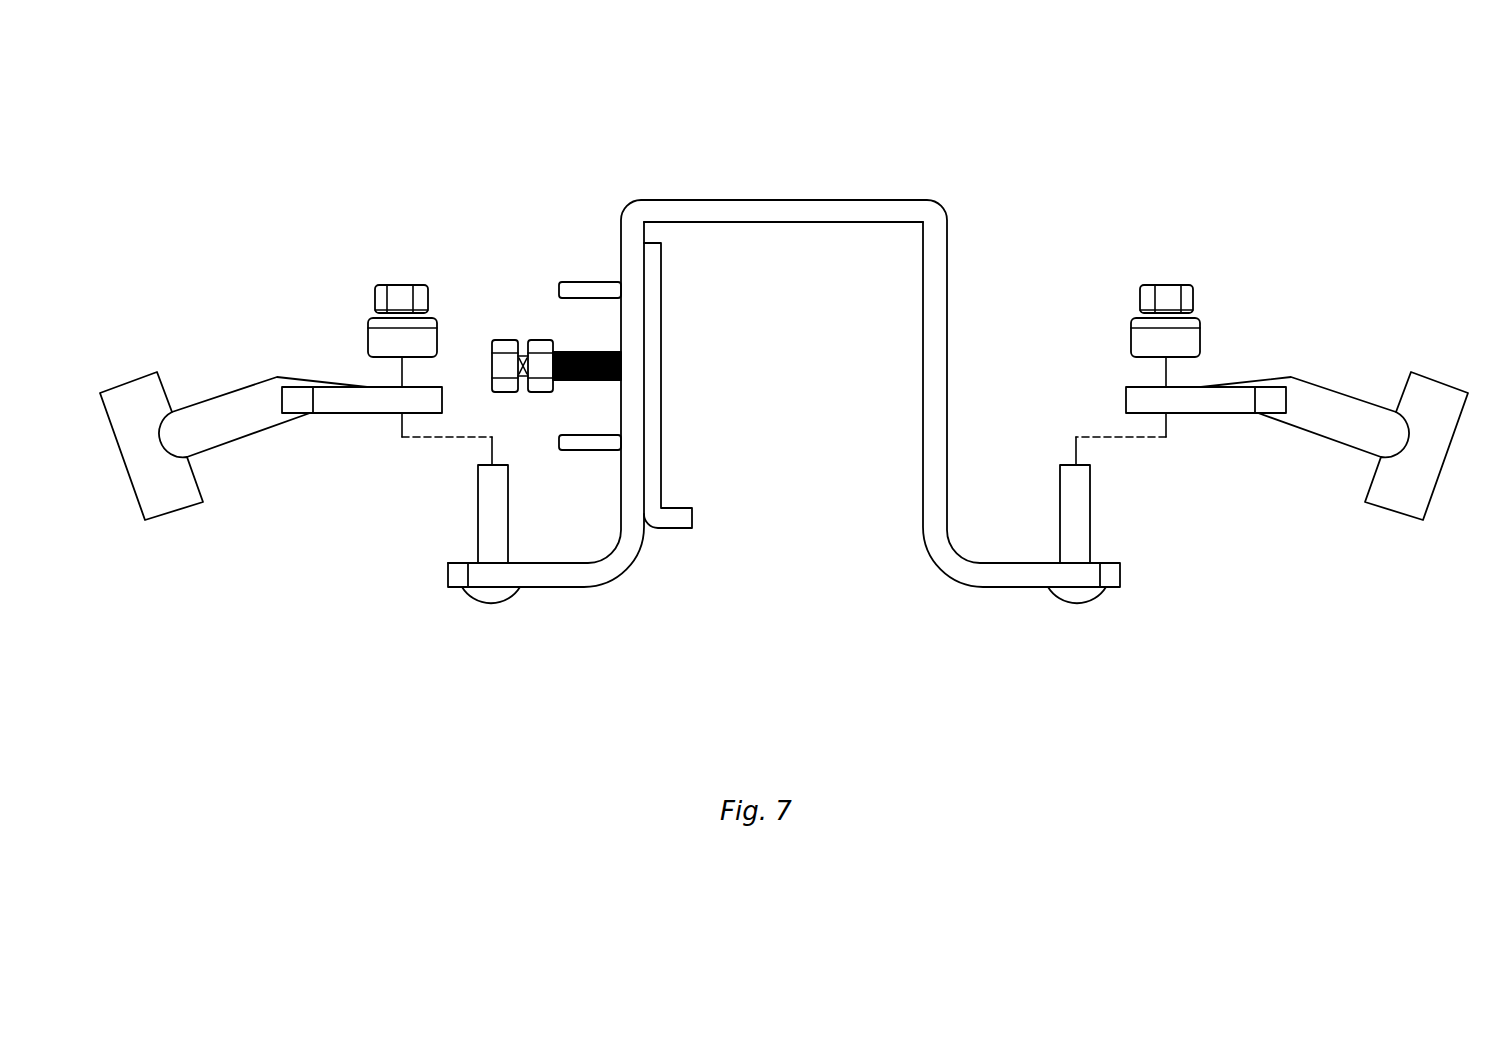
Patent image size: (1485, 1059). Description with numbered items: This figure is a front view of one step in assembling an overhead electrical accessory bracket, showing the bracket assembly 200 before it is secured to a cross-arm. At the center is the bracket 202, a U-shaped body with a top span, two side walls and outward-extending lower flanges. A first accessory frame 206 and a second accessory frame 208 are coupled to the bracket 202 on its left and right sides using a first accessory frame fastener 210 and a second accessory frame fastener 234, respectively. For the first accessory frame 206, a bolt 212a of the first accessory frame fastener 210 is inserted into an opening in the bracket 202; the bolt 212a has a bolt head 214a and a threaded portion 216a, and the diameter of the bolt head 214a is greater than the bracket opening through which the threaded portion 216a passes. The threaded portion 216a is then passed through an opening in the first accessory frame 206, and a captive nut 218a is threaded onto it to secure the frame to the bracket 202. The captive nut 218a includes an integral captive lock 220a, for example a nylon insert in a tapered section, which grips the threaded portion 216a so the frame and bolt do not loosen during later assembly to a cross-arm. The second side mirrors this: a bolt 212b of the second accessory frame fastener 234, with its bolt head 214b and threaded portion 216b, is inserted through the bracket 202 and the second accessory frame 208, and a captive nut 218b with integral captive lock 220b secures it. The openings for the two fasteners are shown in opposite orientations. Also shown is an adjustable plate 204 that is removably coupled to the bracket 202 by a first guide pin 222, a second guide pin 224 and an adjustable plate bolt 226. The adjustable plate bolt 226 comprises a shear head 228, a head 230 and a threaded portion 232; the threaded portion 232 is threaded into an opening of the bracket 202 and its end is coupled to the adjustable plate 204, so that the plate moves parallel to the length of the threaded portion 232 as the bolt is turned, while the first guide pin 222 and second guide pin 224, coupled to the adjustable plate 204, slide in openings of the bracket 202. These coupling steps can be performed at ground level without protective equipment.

The bracket assembly 200 is at (822, 160).
The bracket 202 is at (677, 208).
The adjustable plate 204 is at (677, 522).
The first accessory frame 206 is at (247, 382).
The second accessory frame 208 is at (1338, 372).
The first accessory frame fastener 210 is at (487, 628).
The bolt 212a is at (437, 513).
The bolt 212b is at (1122, 520).
The bolt head 214a is at (477, 598).
The bolt head 214b is at (1088, 600).
The threaded portion 216a is at (478, 488).
The threaded portion 216b is at (1060, 502).
The captive nut 218a is at (360, 278).
The captive nut 218b is at (1215, 295).
The captive lock 220a is at (368, 337).
The captive lock 220b is at (1203, 336).
The first guide pin 222 is at (585, 282).
The second guide pin 224 is at (583, 452).
The adjustable plate bolt 226 is at (520, 310).
The shear head 228 is at (490, 360).
The head 230 is at (540, 390).
The threaded portion 232 is at (587, 352).
The second accessory frame fastener 234 is at (1077, 630).